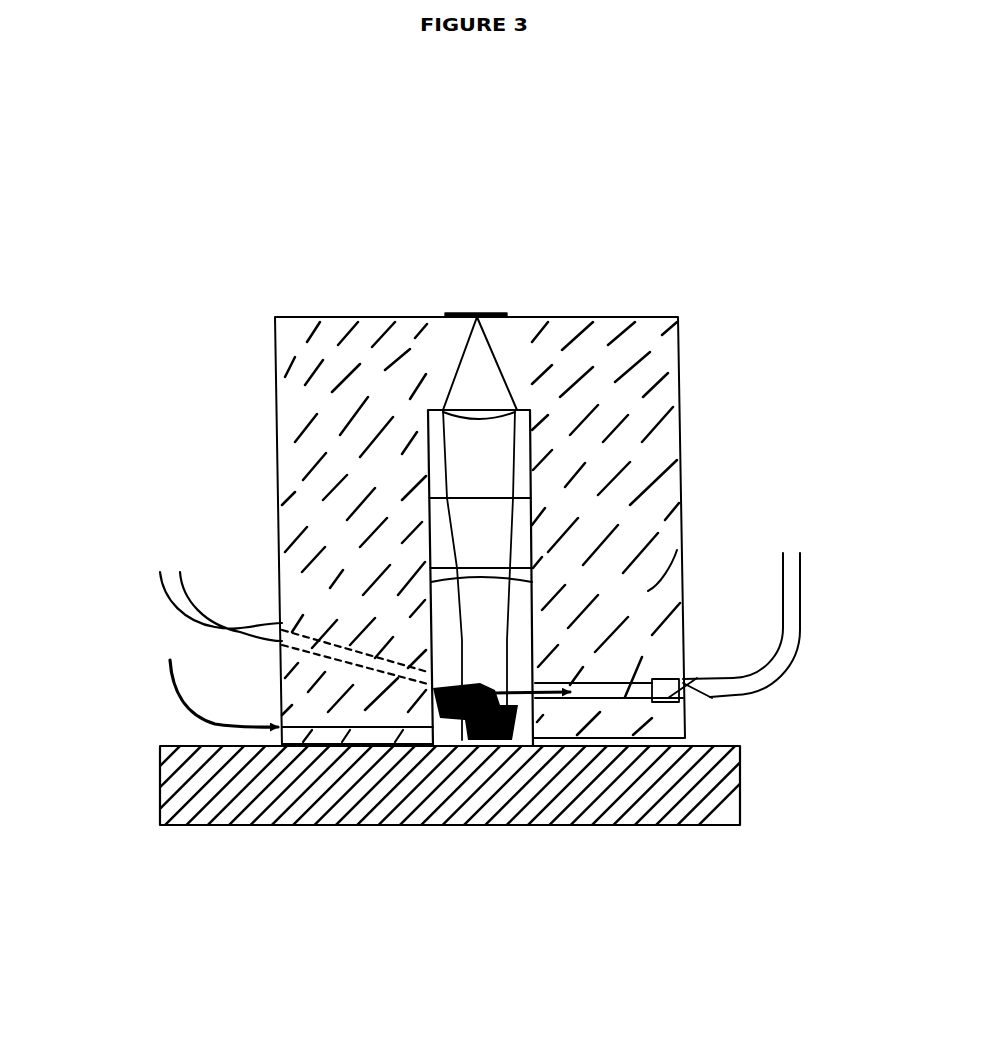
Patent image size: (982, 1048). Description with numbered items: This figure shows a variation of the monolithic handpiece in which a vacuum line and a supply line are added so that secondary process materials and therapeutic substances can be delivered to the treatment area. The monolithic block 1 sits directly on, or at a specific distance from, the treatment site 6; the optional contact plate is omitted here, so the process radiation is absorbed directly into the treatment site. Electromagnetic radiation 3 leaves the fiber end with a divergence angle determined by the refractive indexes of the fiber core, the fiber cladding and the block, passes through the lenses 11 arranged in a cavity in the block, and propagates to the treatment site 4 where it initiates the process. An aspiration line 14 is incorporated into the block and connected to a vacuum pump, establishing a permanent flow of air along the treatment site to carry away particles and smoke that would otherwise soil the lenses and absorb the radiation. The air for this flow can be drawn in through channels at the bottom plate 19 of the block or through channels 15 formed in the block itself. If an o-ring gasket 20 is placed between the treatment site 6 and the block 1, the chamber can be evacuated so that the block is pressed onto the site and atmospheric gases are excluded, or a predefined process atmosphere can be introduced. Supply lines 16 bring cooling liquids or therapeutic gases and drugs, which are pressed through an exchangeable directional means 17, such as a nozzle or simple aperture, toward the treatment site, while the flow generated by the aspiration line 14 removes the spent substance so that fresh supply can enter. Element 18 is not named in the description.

The monolithic block 1 is at (650, 375).
The electromagnetic radiation 3 is at (508, 670).
The treatment site 4 is at (507, 746).
The treatment site 6 is at (683, 795).
The lenses 11 is at (443, 490).
The aspiration line 14 is at (712, 698).
The channels 15 is at (275, 728).
The supply lines 16 is at (173, 608).
The directional means 17 is at (438, 677).
The plasma region 18 is at (430, 692).
The bottom plate 19 is at (685, 740).
The o-ring gasket 20 is at (358, 746).